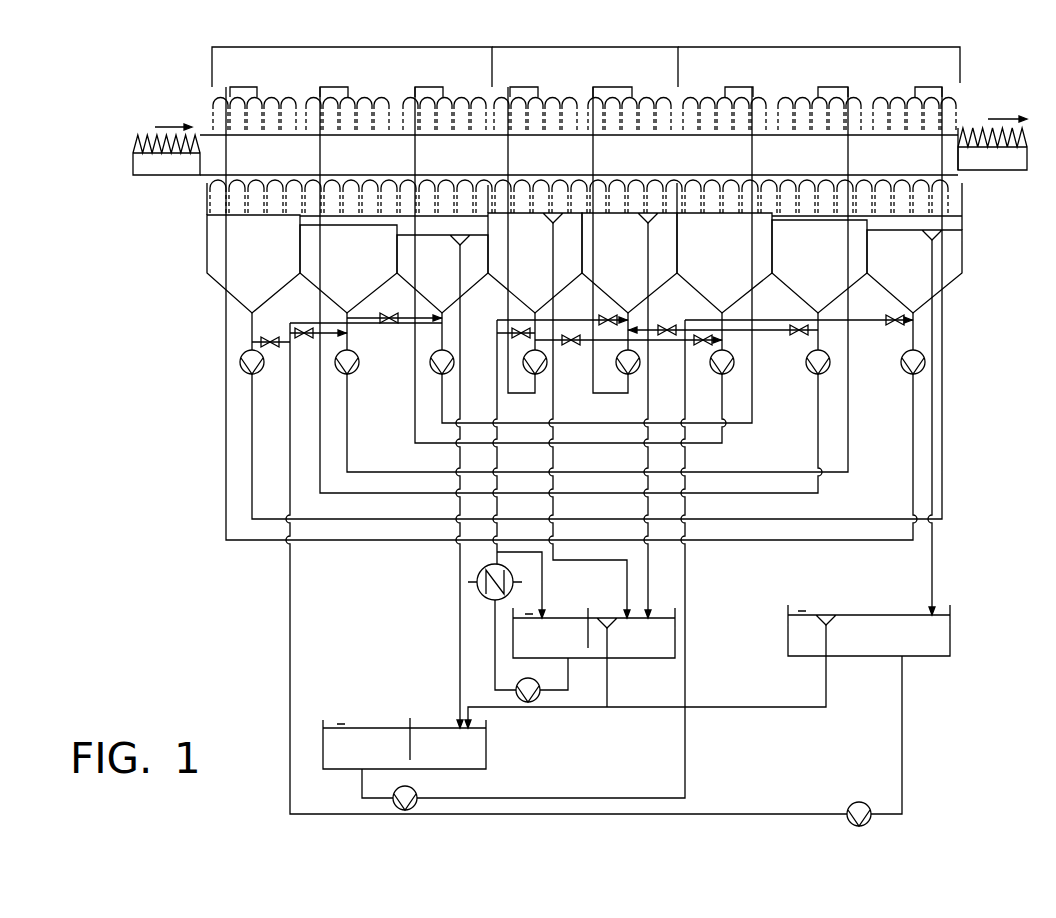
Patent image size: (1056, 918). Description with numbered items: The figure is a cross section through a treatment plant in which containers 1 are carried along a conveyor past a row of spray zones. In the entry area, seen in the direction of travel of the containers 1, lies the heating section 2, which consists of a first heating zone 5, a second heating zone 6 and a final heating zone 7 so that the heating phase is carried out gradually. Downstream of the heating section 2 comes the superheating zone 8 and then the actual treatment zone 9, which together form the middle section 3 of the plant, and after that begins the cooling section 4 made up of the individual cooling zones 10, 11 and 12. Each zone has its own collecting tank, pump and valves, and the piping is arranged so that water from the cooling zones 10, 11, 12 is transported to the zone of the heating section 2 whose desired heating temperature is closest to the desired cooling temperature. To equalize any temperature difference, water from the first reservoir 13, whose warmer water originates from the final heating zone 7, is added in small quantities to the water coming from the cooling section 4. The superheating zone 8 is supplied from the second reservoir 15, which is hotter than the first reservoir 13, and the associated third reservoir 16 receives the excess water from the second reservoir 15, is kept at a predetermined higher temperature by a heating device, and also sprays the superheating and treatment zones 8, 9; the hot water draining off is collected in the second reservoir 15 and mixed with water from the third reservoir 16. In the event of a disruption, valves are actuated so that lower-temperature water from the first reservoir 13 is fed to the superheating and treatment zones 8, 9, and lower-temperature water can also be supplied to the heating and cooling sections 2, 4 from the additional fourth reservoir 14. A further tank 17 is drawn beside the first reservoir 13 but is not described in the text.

The containers 1 is at (166, 172).
The heating section 2 is at (352, 67).
The second treatment section 3 is at (585, 67).
The cooling section 4 is at (819, 65).
The first heating zone 5 is at (253, 264).
The second heating zone 6 is at (348, 269).
The final heating zone 7 is at (442, 274).
The superheating zone 8 is at (535, 263).
The treatment zone 9 is at (629, 263).
The cooling zone 10 is at (724, 263).
The cooling zone 11 is at (819, 266).
The cooling zone 12 is at (914, 271).
The first reservoir 13 is at (448, 744).
The fourth reservoir 14 is at (869, 630).
The second reservoir 15 is at (631, 633).
The third reservoir 16 is at (550, 633).
The storage tank 17 is at (366, 743).